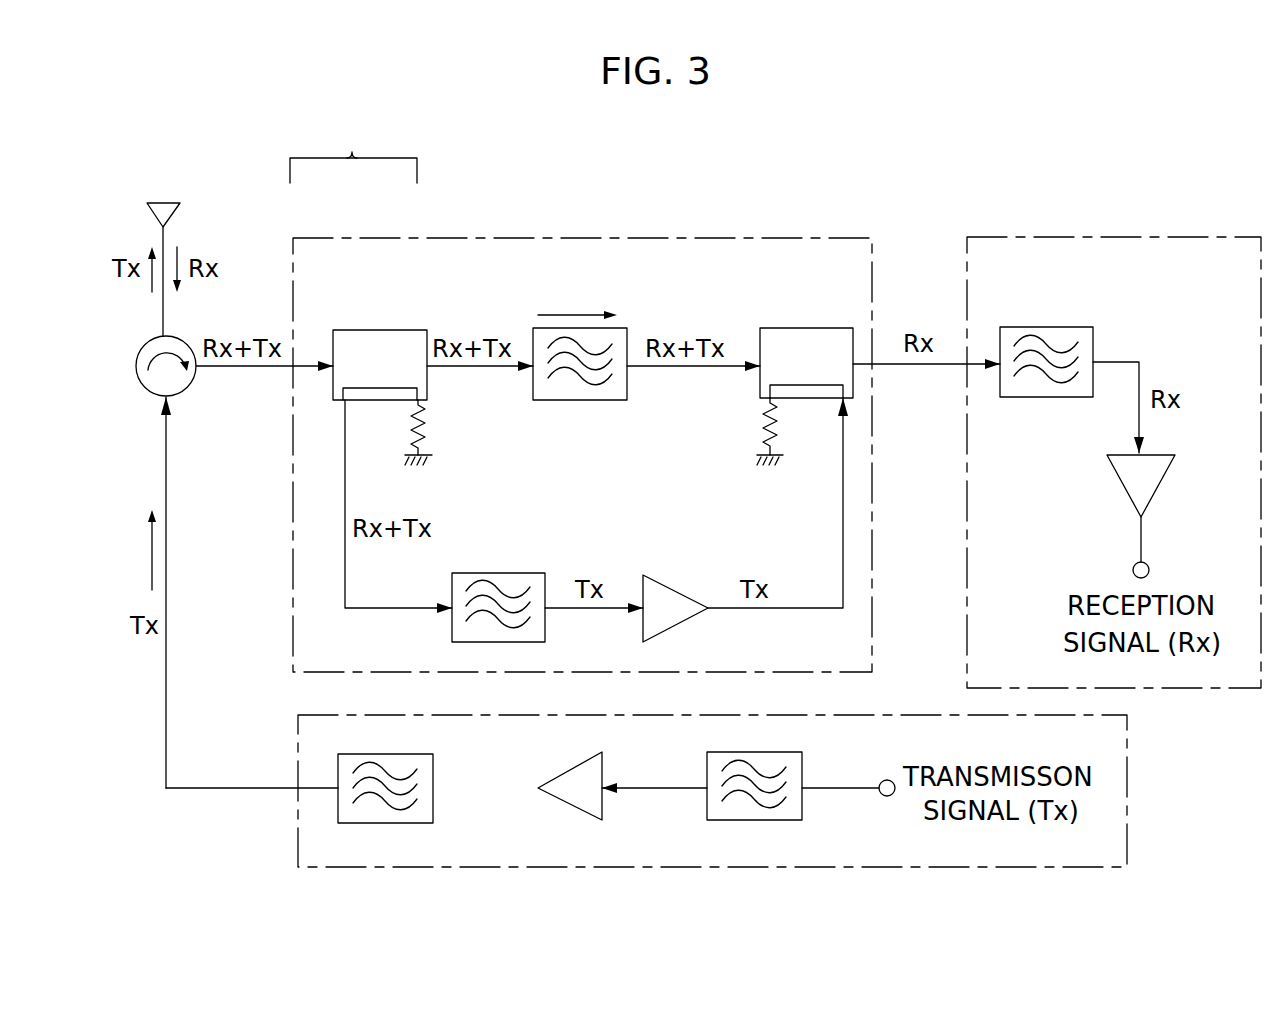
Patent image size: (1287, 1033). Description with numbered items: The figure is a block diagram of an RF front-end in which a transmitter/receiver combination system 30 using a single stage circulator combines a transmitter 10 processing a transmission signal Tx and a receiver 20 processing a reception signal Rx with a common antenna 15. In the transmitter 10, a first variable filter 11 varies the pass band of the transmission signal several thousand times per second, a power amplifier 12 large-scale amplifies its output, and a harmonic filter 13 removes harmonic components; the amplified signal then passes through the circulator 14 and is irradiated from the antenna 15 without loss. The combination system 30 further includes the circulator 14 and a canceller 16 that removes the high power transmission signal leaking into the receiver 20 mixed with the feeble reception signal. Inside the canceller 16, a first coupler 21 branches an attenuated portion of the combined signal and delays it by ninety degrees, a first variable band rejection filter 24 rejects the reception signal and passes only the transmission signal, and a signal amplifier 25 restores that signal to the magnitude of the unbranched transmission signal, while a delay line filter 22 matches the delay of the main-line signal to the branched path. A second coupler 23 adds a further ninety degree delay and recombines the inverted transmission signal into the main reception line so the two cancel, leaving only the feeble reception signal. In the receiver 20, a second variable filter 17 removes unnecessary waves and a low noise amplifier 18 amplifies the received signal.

The transmitter 10 is at (1127, 843).
The first variable filter 11 is at (755, 820).
The power amplifier 12 is at (585, 817).
The harmonic filter 13 is at (380, 823).
The circulator 14 is at (182, 338).
The antenna 15 is at (173, 204).
The canceller 16 is at (425, 238).
The second variable filter 17 is at (1073, 327).
The low noise amplifier 18 is at (1157, 487).
The receiver 20 is at (1227, 688).
The first coupler 21 is at (398, 330).
The delay line filter 22 is at (620, 328).
The second coupler 23 is at (790, 328).
The first variable band rejection filter 24 is at (493, 573).
The signal amplifier 25 is at (675, 590).
The transmitter/receiver combination system 30 is at (353, 152).